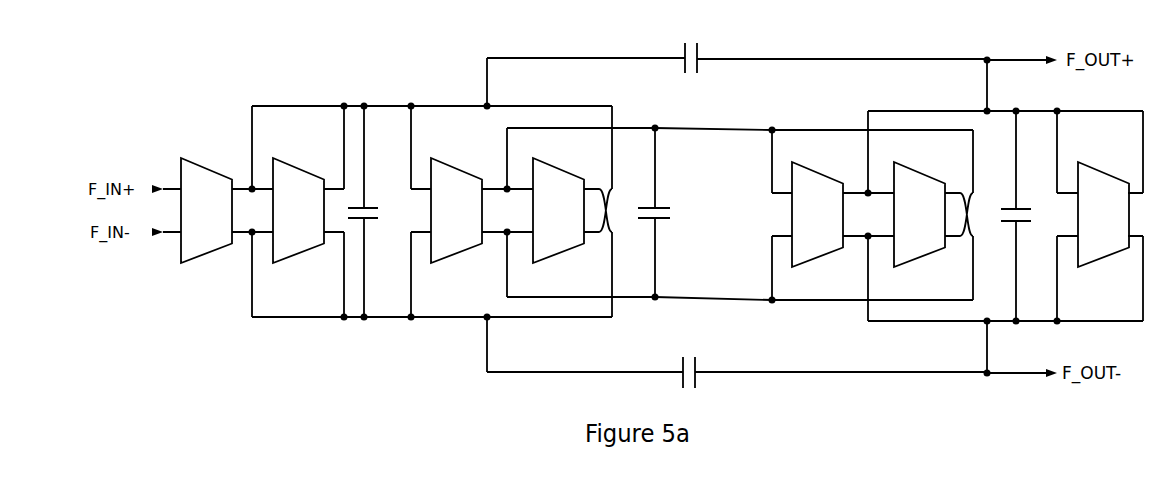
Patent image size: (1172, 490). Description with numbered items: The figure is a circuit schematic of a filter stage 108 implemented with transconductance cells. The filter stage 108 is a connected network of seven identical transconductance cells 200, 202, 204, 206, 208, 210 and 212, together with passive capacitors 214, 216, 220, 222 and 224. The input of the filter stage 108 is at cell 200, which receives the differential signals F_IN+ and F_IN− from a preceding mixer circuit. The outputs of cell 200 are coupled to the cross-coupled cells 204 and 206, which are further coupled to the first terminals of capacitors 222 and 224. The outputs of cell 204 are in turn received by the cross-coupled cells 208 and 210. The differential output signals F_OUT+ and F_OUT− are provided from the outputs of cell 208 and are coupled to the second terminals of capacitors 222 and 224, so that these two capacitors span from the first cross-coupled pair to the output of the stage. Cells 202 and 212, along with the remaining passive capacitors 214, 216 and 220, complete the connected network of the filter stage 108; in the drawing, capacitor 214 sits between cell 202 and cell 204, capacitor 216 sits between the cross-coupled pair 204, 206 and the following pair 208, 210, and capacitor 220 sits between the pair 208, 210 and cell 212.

The filter stage 108 is at (436, 45).
The transconductance cell 200 is at (227, 210).
The transconductance cell 202 is at (308, 211).
The transconductance cell 204 is at (482, 210).
The transconductance cell 206 is at (581, 212).
The transconductance cell 208 is at (832, 215).
The transconductance cell 210 is at (872, 215).
The transconductance cell 212 is at (1103, 214).
The passive capacitor 214 is at (380, 207).
The passive capacitor 216 is at (672, 214).
The passive capacitor 220 is at (1032, 209).
The passive capacitor 222 is at (699, 71).
The passive capacitor 224 is at (697, 360).